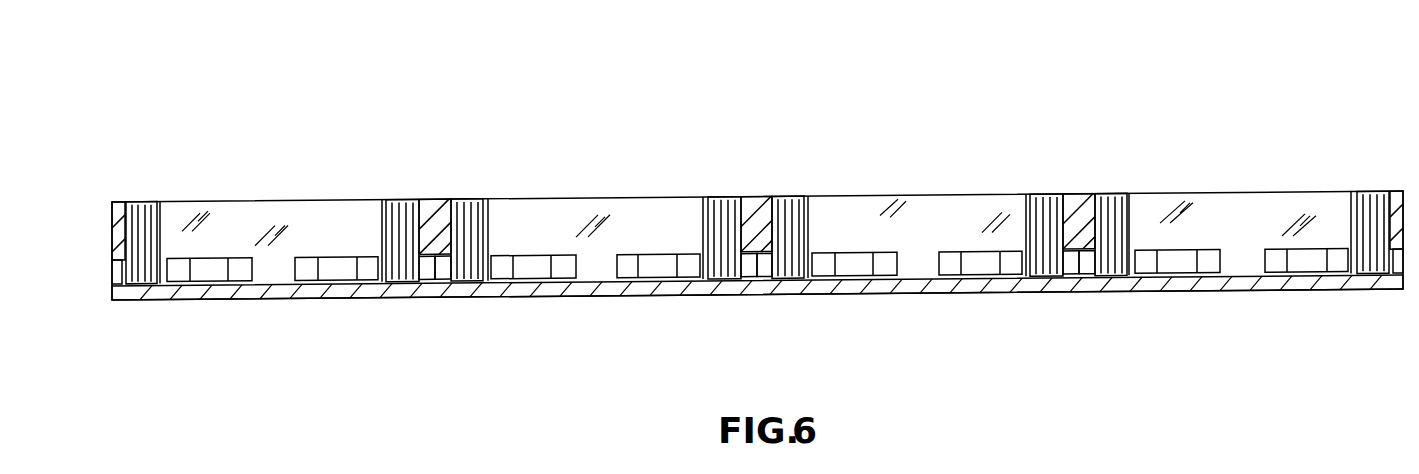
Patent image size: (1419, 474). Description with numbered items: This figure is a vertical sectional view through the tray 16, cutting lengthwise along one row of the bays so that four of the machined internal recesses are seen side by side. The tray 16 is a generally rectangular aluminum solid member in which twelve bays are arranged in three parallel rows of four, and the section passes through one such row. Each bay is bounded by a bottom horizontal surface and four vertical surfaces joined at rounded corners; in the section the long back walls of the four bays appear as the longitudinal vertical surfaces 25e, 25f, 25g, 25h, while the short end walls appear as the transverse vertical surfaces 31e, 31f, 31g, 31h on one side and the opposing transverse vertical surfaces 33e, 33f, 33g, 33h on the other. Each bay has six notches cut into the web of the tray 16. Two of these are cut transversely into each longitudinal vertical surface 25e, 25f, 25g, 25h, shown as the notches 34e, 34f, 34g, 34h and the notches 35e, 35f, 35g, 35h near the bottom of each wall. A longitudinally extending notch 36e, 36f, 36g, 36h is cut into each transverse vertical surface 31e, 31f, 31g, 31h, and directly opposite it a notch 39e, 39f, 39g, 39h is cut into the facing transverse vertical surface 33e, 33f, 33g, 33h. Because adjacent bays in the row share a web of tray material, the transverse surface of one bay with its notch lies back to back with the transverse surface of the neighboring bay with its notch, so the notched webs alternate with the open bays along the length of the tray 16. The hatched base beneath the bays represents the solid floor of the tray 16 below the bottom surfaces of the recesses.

The tray 16 is at (1232, 74).
The longitudinal vertical surface 25e is at (330, 227).
The longitudinal vertical surface 25f is at (543, 221).
The longitudinal vertical surface 25g is at (930, 222).
The longitudinal vertical surface 25h is at (1237, 218).
The transverse vertical surface 31e is at (416, 227).
The transverse vertical surface 31f is at (738, 229).
The transverse vertical surface 31g is at (1058, 230).
The transverse vertical surface 31h is at (1385, 233).
The transverse vertical surface 33e is at (128, 233).
The transverse vertical surface 33f is at (452, 229).
The transverse vertical surface 33g is at (775, 233).
The transverse vertical surface 33h is at (1097, 233).
The notch 34e is at (212, 276).
The notch 34f is at (535, 277).
The notch 34g is at (860, 283).
The notch 34h is at (1170, 277).
The notch 35e is at (328, 277).
The notch 35f is at (653, 282).
The notch 35g is at (980, 275).
The notch 35h is at (1302, 278).
The notch 36e is at (422, 270).
The notch 36f is at (720, 280).
The notch 36g is at (1050, 276).
The notch 36h is at (1405, 281).
The notch 39e is at (112, 272).
The notch 39f is at (450, 275).
The notch 39g is at (792, 283).
The notch 39h is at (1110, 277).